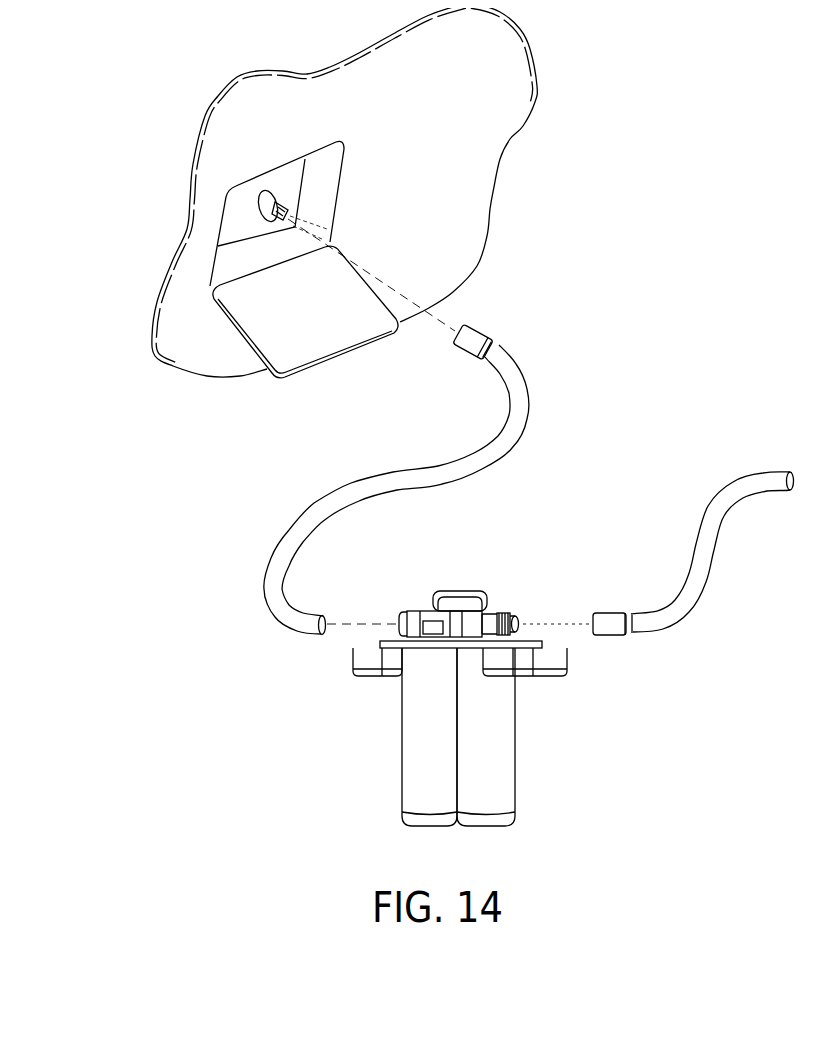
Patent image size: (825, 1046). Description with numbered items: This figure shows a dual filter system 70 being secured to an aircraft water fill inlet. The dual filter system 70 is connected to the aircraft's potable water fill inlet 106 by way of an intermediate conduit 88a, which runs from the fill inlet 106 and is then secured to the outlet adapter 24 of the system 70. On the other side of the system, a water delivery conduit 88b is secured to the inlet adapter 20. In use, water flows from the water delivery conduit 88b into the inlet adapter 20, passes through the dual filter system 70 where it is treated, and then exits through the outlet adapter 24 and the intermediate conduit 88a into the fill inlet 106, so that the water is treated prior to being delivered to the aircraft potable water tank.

The potable water fill inlet 106 is at (258, 212).
The intermediate conduit 88a is at (523, 387).
The water delivery conduit 88b is at (703, 557).
The outlet adapter 24 is at (398, 620).
The inlet adapter 20 is at (517, 617).
The dual filter system 70 is at (500, 686).